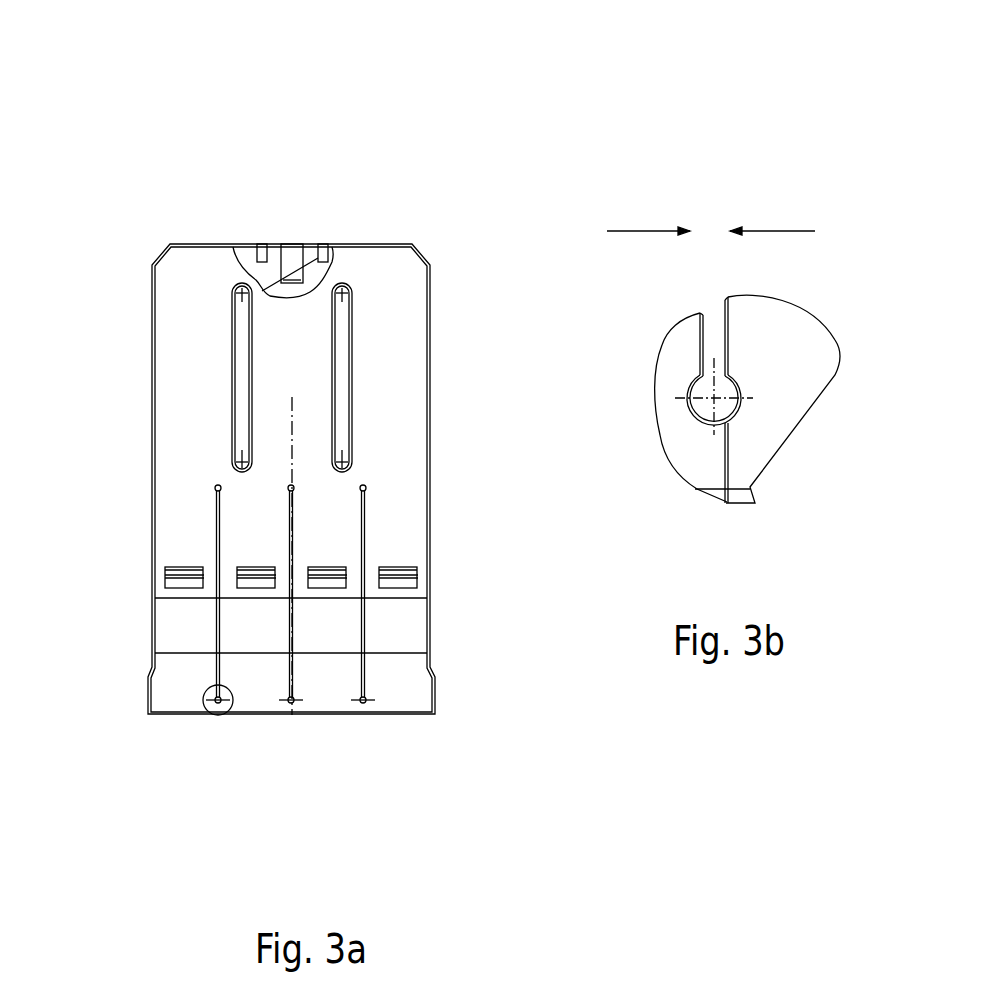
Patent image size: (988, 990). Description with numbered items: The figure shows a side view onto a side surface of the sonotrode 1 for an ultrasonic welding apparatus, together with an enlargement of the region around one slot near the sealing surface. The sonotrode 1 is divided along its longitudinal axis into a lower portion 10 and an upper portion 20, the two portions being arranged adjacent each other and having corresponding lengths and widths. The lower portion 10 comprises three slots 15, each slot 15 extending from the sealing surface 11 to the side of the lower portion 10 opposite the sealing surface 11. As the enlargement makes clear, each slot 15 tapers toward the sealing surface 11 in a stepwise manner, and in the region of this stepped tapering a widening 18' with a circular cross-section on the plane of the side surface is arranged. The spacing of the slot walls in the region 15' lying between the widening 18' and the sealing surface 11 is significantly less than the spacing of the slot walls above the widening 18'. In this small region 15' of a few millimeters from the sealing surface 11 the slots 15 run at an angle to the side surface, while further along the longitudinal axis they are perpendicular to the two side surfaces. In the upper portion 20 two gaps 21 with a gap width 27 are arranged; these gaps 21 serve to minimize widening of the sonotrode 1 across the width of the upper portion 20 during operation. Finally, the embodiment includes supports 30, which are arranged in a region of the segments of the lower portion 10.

In FIG. 3A, the sonotrode 1 is at (335, 190).
In FIG. 3A, the lower portion 10 is at (172, 532).
In FIG. 3A, the upper portion 20 is at (192, 370).
In FIG. 3A, the gaps 21 is at (243, 320).
In FIG. 3A, the supports 30 is at (398, 578).
In FIG. 3A, the slots 15 is at (290, 667).
In FIG. 3B, the slots 15 is at (813, 383).
In FIG. 3A, the sealing surface 11 is at (240, 733).
In FIG. 3B, the gap width 27 is at (711, 209).
In FIG. 3B, the region of the slot 15' is at (774, 407).
In FIG. 3B, the widening 18' is at (710, 466).